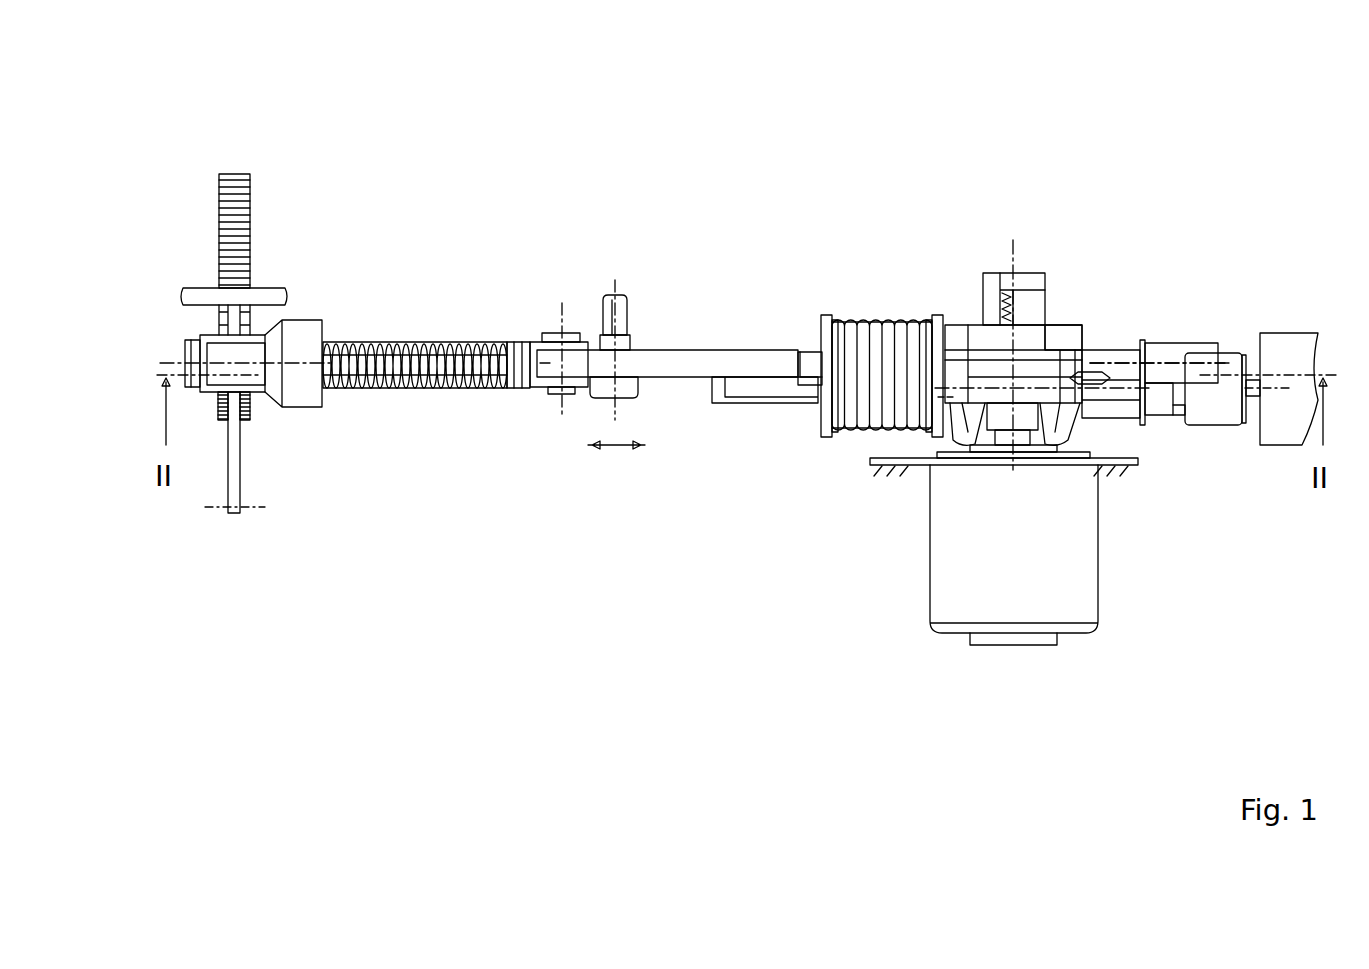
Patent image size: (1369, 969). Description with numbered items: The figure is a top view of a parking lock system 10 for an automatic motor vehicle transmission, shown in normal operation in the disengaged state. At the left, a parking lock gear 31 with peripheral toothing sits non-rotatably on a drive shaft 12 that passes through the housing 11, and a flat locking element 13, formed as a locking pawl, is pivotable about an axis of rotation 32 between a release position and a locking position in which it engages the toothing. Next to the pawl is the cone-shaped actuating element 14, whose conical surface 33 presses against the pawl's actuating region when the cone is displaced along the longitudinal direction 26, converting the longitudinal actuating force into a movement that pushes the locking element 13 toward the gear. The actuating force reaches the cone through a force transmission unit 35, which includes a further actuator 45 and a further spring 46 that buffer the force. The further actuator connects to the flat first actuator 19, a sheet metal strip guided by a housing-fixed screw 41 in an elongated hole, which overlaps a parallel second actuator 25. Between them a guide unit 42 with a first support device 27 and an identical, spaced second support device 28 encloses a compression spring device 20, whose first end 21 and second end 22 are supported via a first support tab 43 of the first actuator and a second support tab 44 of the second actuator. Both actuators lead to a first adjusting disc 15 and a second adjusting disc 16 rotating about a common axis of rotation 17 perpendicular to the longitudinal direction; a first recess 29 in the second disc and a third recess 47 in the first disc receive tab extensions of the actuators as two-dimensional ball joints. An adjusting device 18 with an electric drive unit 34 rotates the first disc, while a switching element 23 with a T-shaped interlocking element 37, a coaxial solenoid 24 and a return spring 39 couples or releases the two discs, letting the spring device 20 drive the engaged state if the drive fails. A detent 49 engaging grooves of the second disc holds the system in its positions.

The parking lock system 10 is at (1186, 221).
The housing 11 is at (884, 470).
The drive shaft 12 is at (278, 300).
The locking element 13 is at (234, 520).
The actuating element 14 is at (302, 395).
The first adjusting disc 15 is at (1123, 400).
The second adjusting disc 16 is at (1120, 350).
The common axis of rotation 17 is at (1014, 272).
The adjusting device 18 is at (1318, 305).
The first actuator 19 is at (690, 350).
The spring device 20 is at (877, 330).
The first end 21 is at (932, 312).
The second end 22 is at (838, 319).
The switching element 23 is at (911, 570).
The solenoid 24 is at (1062, 600).
The second actuator 25 is at (745, 390).
The longitudinal direction 26 is at (616, 485).
The first support device 27 is at (830, 318).
The second support device 28 is at (935, 330).
The first recess 29 is at (1092, 352).
The parking lock gear 31 is at (243, 263).
The axis of rotation 32 is at (213, 510).
The conical surface 33 is at (268, 383).
The drive unit 34 is at (1276, 348).
The force transmission unit 35 is at (422, 340).
The interlocking element 37 is at (1066, 340).
The return spring 39 is at (1005, 300).
The screw 41 is at (612, 295).
The guide unit 42 is at (815, 327).
The first support tab 43 is at (808, 383).
The second support tab 44 is at (945, 397).
The further actuator 45 is at (510, 343).
The further spring 46 is at (420, 392).
The third recess 47 is at (1090, 400).
The detent 49 is at (1178, 350).